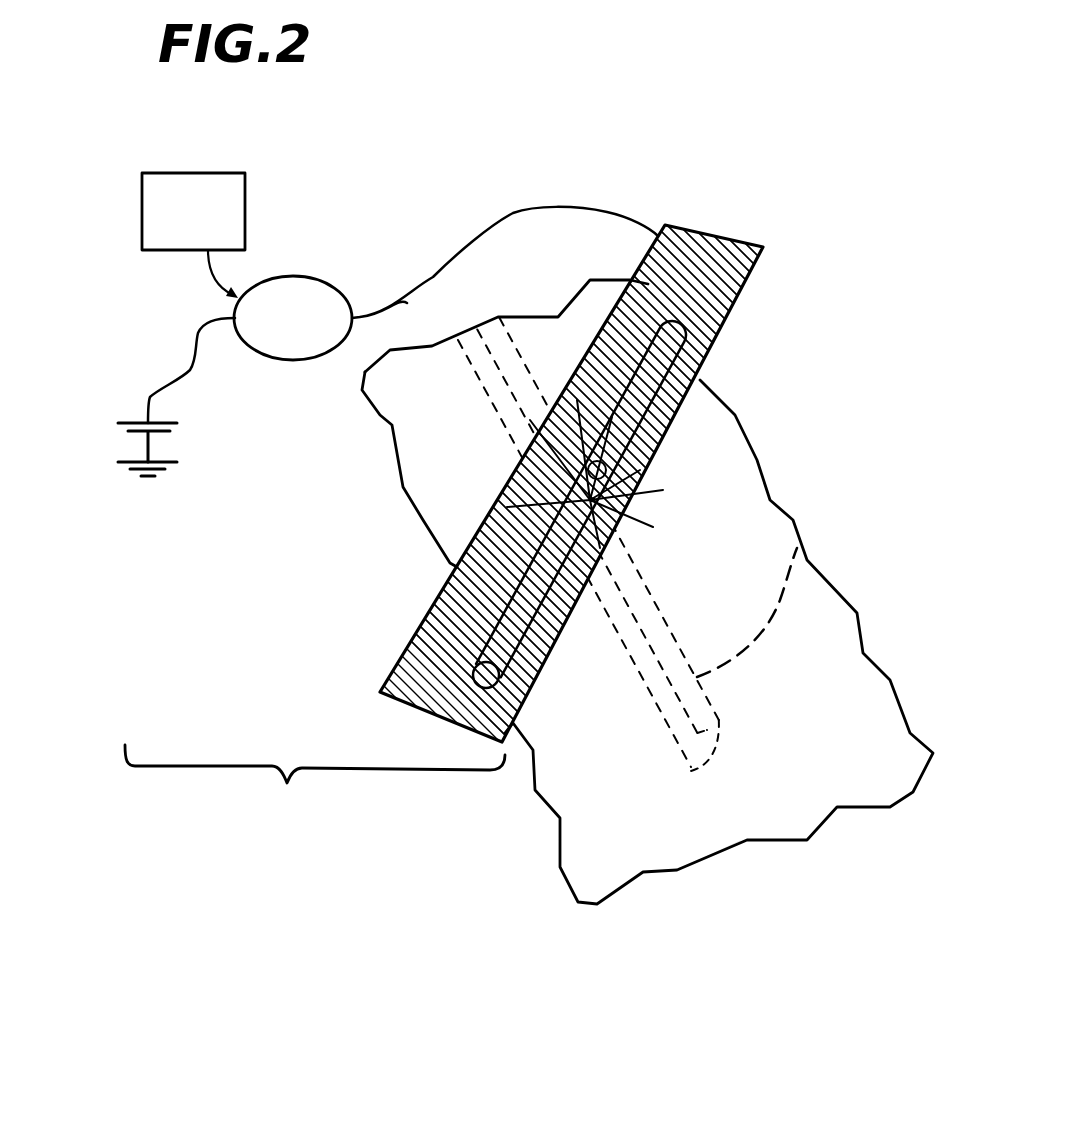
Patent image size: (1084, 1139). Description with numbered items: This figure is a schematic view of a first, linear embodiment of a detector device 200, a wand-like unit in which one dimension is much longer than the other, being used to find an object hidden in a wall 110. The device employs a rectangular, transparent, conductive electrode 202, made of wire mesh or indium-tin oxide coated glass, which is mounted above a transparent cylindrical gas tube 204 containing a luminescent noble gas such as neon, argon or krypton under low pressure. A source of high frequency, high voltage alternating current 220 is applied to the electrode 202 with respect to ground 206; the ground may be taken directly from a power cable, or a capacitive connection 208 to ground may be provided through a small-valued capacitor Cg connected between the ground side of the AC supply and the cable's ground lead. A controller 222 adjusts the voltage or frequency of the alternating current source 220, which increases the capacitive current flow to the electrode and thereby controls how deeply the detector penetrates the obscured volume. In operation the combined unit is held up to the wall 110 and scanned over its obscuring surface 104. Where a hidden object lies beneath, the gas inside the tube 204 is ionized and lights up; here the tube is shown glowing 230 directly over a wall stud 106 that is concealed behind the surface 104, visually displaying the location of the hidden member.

The wall surface 104 is at (700, 838).
The wall stud 106 is at (797, 548).
The wall 110 is at (825, 830).
The detector device 200 is at (315, 782).
The transparent conductive electrode 202 is at (732, 233).
The gas tube 204 is at (690, 385).
The ground 206 is at (173, 453).
The capacitive connection to ground 208 is at (130, 437).
The high frequency high voltage alternating current source 220 is at (297, 277).
The controller 222 is at (245, 190).
The glowing 230 is at (633, 508).